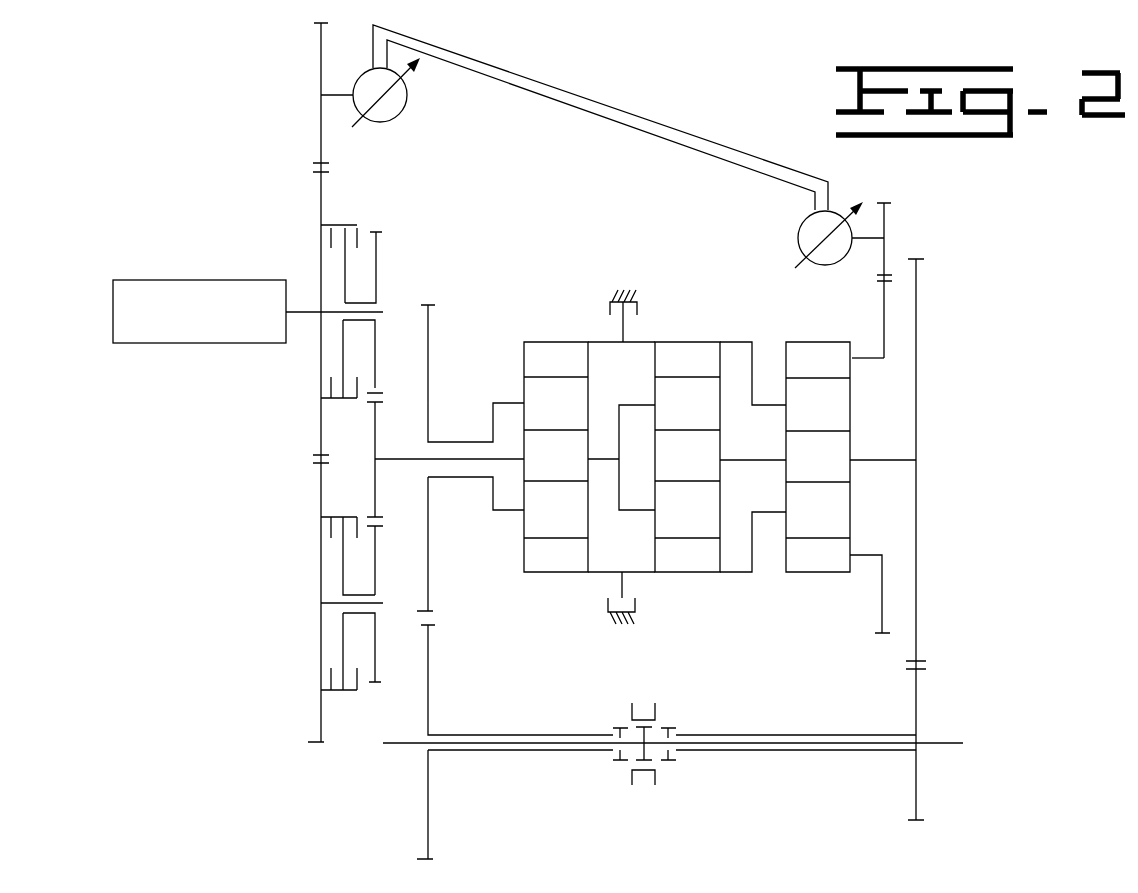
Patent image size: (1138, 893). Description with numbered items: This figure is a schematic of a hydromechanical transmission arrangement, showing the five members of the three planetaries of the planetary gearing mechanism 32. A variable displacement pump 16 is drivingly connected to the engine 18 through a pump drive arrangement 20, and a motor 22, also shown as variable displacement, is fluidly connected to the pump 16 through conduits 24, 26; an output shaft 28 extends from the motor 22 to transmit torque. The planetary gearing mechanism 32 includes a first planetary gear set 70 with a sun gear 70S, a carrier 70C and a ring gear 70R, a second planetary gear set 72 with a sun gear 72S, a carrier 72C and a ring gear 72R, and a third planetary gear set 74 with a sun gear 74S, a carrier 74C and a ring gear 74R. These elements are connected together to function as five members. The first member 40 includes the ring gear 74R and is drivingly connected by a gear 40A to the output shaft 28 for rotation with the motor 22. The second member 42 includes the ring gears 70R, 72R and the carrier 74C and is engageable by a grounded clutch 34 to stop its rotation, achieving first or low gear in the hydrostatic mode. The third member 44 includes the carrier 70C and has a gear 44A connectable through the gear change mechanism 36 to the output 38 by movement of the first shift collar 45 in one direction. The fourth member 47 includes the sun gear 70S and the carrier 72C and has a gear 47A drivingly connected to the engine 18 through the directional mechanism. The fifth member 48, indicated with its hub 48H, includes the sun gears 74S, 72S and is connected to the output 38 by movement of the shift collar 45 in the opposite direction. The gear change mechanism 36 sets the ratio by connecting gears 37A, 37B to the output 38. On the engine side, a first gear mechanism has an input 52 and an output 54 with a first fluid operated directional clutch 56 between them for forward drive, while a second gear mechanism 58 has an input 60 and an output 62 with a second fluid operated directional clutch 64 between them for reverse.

The variable displacement pump 16 is at (358, 78).
The engine 18 is at (236, 280).
The pump drive arrangement 20 is at (262, 103).
The motor 22 is at (810, 222).
The conduit 24 is at (612, 119).
The conduit 26 is at (590, 101).
The output shaft 28 is at (868, 238).
The planetary gearing mechanism 32 is at (662, 273).
The grounded clutch 34 is at (604, 306).
The gear change mechanism 36 is at (634, 803).
The gear 37A is at (430, 690).
The gear 37B is at (918, 700).
The output 38 is at (963, 741).
The first member 40 is at (856, 360).
The gear 40A is at (886, 300).
The second member 42 is at (620, 330).
The third member 44 is at (506, 402).
The gear 44A is at (430, 605).
The first shift collar 45 is at (658, 715).
The fourth member 47 is at (412, 459).
The gear 47A is at (376, 425).
The fifth member 48 is at (902, 460).
The hub 48H is at (918, 575).
The input 52 is at (322, 225).
The output 54 is at (378, 282).
The first fluid operated directional clutch 56 is at (365, 228).
The second gear mechanism 58 is at (266, 742).
The input 60 is at (318, 572).
The output 62 is at (378, 582).
The second fluid operated directional clutch 64 is at (358, 690).
The first planetary gear set 70 is at (541, 318).
The ring gear 70R is at (522, 352).
The sun gear 70S is at (580, 445).
The carrier 70C is at (527, 510).
The second planetary gear set 72 is at (671, 323).
The ring gear 72R is at (700, 348).
The sun gear 72S is at (714, 450).
The carrier 72C is at (668, 510).
The third planetary gear set 74 is at (817, 332).
The ring gear 74R is at (836, 352).
The carrier 74C is at (856, 420).
The sun gear 74S is at (852, 467).